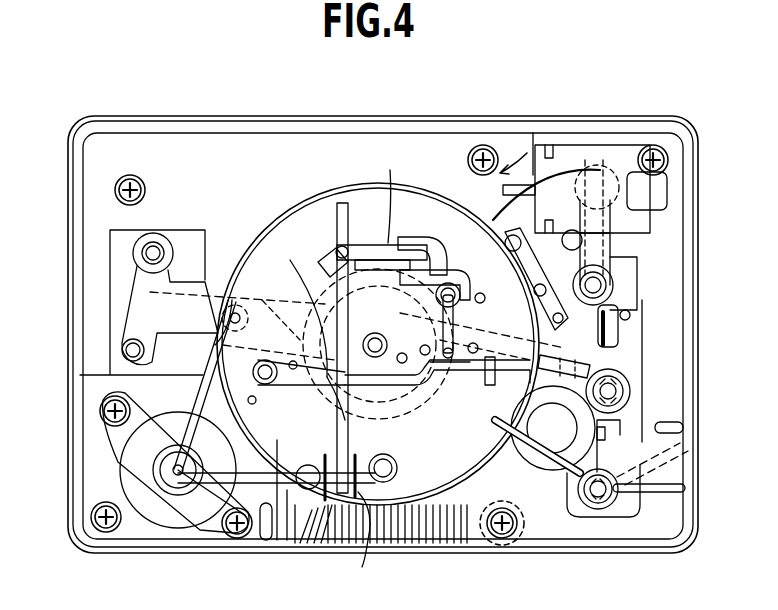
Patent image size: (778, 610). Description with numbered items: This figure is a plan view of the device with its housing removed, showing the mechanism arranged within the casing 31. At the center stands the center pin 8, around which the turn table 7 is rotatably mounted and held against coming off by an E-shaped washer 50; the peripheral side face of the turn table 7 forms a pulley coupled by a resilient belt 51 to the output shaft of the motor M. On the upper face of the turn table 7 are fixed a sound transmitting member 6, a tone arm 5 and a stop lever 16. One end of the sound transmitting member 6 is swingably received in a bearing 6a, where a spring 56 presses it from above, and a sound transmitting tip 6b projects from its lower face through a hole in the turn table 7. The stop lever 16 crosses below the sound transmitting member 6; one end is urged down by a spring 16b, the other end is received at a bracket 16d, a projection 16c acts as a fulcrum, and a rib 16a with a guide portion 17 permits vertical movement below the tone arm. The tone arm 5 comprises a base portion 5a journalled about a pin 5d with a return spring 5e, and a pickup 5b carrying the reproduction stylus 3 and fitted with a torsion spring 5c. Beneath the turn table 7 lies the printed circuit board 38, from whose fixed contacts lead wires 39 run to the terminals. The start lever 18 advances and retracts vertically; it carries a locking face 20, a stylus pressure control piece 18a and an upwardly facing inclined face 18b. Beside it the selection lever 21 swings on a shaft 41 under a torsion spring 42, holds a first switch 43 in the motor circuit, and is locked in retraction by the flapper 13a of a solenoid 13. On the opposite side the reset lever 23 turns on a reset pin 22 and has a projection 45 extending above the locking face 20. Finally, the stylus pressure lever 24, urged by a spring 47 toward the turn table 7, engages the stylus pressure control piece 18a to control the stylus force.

The casing 31 is at (108, 147).
The stylus pressure lever 24 is at (143, 295).
The spring 47 is at (232, 300).
The E-shaped washer 50 is at (338, 252).
The reproduction stylus 3 is at (340, 250).
The tone arm 5 is at (383, 198).
The base portion 5a is at (415, 238).
The pickup 5b is at (362, 250).
The torsion spring 5c is at (435, 247).
The pin 5d is at (484, 296).
The return spring 5e is at (468, 258).
The sound transmitting member 6 is at (340, 427).
The bearing 6a is at (350, 544).
The sound transmitting tip 6b is at (333, 297).
The turn table 7 is at (222, 523).
The center pin 8 is at (380, 345).
The solenoid 13 is at (557, 152).
The flapper 13a is at (597, 160).
The stop lever 16 is at (418, 386).
The rib 16a is at (453, 386).
The spring 16b is at (267, 386).
The projection 16c is at (300, 308).
The bracket 16d is at (490, 385).
The guide portion 17 is at (460, 347).
The start lever 18 is at (628, 407).
The stylus pressure control piece 18a is at (603, 362).
The upwardly facing inclined face 18b is at (613, 347).
The locking face 20 is at (598, 440).
The selection lever 21 is at (660, 188).
The reset pin 22 is at (612, 510).
The reset lever 23 is at (680, 487).
The printed circuit board 38 is at (458, 497).
The lead wires 39 is at (410, 545).
The shaft 41 is at (610, 278).
The torsion spring 42 is at (620, 303).
The first switch 43 is at (580, 258).
The projection 45 is at (585, 513).
The resilient belt 51 is at (207, 480).
The spring 56 is at (398, 468).
The motor M is at (150, 513).